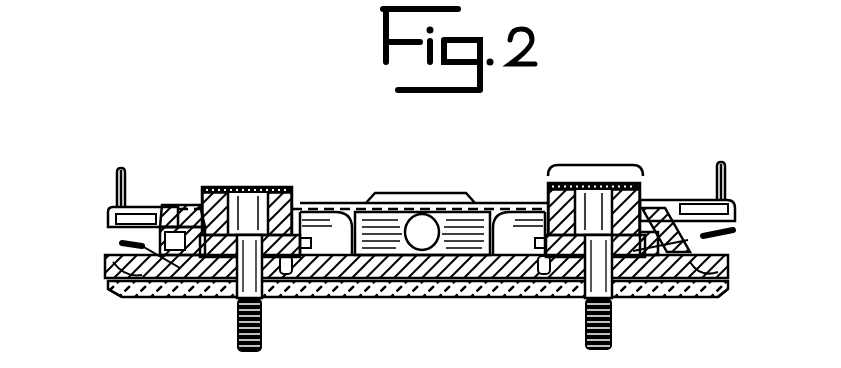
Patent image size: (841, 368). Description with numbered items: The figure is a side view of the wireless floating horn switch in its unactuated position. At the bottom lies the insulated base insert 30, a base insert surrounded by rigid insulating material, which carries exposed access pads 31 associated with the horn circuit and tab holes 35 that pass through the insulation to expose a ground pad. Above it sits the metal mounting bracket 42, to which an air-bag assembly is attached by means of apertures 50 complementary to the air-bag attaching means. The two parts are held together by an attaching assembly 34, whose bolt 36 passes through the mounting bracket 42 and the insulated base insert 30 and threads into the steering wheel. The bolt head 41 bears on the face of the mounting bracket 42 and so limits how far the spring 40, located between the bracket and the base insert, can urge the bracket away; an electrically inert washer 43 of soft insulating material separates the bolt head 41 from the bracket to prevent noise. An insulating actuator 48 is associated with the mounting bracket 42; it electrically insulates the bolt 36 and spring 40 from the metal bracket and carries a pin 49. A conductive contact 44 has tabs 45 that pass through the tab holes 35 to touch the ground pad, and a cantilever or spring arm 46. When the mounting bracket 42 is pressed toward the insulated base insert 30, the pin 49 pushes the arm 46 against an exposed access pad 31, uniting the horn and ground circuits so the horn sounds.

The insulated base insert 30 is at (178, 300).
The exposed access pad 31 is at (105, 261).
The attaching assembly 34 is at (595, 166).
The tab hole 35 is at (314, 262).
The bolt 36 is at (236, 196).
The spring 40 is at (667, 200).
The bolt head 41 is at (273, 200).
The mounting bracket 42 is at (727, 172).
The washer 43 is at (192, 200).
The contact 44 is at (128, 242).
The tab 45 is at (268, 260).
The arm 46 is at (133, 300).
The actuator 48 is at (173, 205).
The pin 49 is at (113, 238).
The aperture 50 is at (420, 222).